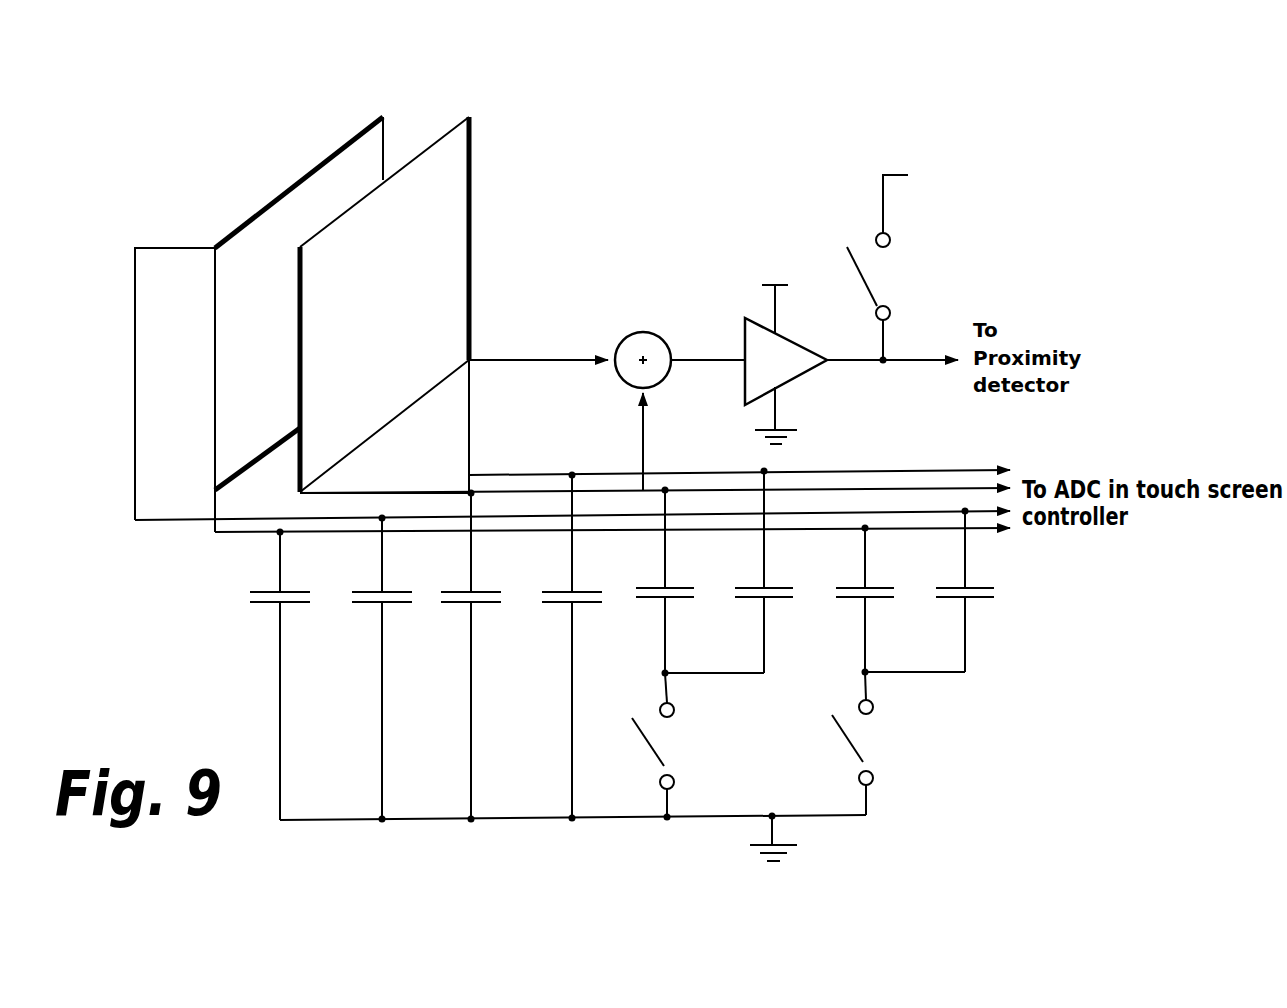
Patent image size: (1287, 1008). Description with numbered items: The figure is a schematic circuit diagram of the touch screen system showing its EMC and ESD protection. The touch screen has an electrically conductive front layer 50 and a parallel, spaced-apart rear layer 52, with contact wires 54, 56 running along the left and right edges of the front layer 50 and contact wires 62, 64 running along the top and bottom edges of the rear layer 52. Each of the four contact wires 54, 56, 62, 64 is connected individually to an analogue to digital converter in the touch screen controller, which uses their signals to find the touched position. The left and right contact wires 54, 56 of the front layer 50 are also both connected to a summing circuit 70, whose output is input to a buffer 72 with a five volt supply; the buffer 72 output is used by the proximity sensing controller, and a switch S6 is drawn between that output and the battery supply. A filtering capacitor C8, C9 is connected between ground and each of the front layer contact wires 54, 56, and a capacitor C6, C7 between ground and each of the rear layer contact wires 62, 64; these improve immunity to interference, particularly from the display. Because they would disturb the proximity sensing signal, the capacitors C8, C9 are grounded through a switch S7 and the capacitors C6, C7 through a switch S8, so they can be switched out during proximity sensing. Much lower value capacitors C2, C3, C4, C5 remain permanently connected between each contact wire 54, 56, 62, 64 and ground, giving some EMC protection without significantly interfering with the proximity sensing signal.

The front layer 50 is at (435, 173).
The rear layer 52 is at (327, 192).
The contact wire 54 is at (297, 273).
The contact wire 56 is at (472, 208).
The contact wire 62 is at (360, 128).
The contact wire 64 is at (240, 480).
The summing circuit 70 is at (637, 333).
The buffer 72 is at (745, 325).
The capacitor C2 is at (284, 675).
The capacitor C3 is at (387, 669).
The capacitor C4 is at (477, 656).
The capacitor C5 is at (577, 647).
The capacitor C6 is at (871, 599).
The capacitor C7 is at (970, 590).
The capacitor C8 is at (671, 580).
The capacitor C9 is at (771, 571).
The switch S6 is at (947, 263).
The switch S7 is at (671, 747).
The switch S8 is at (870, 743).